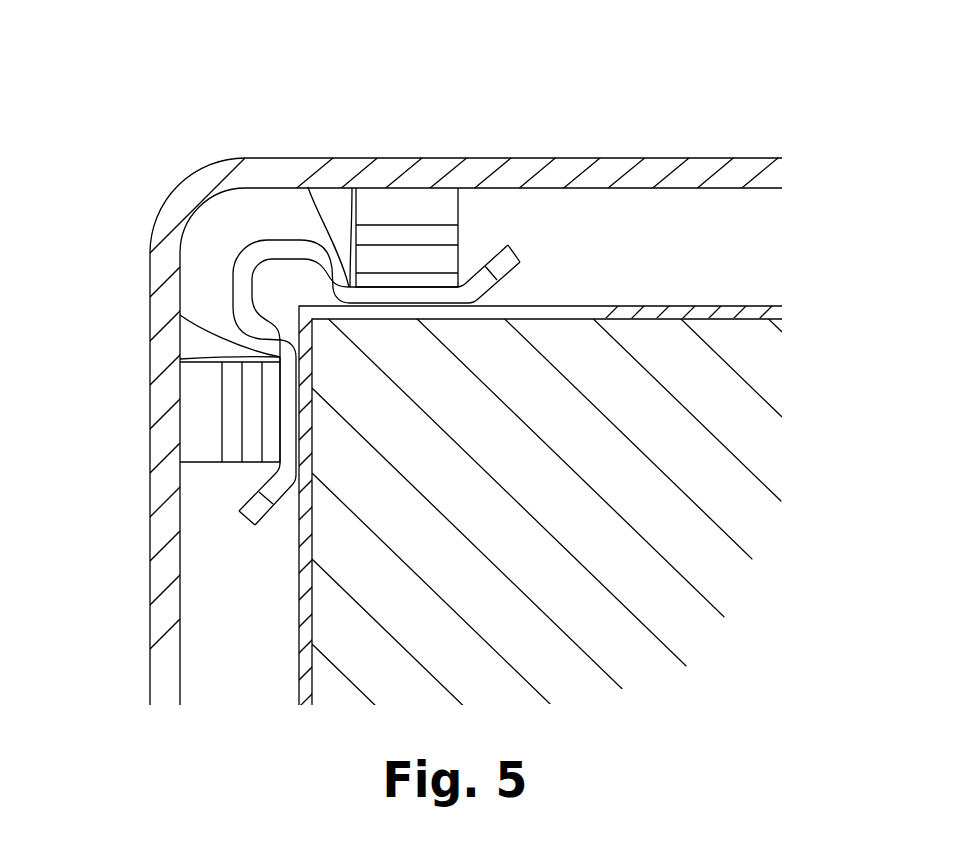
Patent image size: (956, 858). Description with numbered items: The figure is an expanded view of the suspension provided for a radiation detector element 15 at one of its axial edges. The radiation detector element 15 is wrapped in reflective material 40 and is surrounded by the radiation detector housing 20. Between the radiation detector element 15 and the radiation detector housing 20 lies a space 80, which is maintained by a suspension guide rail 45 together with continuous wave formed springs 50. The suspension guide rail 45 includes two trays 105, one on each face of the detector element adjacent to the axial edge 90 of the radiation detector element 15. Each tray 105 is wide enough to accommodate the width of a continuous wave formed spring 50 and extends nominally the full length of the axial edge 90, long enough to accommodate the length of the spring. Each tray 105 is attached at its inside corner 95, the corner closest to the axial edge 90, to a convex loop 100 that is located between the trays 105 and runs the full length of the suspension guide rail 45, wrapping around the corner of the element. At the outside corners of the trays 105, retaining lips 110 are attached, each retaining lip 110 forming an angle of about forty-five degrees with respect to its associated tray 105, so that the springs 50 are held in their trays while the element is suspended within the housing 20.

The radiation detector element 15 is at (718, 353).
The radiation detector housing 20 is at (631, 158).
The reflective material 40 is at (686, 307).
The suspension guide rail 45 is at (286, 240).
The continuous wave formed spring 50 is at (428, 200).
The space 80 is at (648, 217).
The axial edge 90 is at (253, 275).
The inside corner 95 is at (309, 187).
The convex loop 100 is at (250, 245).
The tray 105 is at (347, 195).
The retaining lip 110 is at (521, 257).